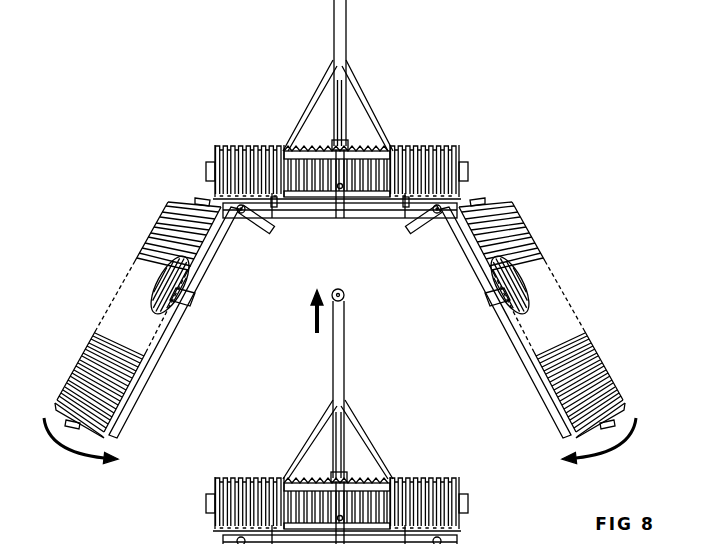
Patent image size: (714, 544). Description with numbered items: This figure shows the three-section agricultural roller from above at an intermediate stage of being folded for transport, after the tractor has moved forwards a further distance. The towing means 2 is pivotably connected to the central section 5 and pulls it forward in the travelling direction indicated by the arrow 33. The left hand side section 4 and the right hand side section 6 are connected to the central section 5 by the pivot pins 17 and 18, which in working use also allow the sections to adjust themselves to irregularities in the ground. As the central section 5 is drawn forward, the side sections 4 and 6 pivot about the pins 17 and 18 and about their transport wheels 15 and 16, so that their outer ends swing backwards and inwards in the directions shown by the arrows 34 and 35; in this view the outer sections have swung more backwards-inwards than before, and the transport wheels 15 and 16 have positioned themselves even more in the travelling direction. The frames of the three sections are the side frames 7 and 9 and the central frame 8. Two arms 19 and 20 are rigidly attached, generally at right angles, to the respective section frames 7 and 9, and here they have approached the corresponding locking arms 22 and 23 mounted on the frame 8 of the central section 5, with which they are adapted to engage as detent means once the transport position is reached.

The towing means 2 is at (347, 38).
The left hand side section 4 is at (80, 333).
The central section 5 is at (263, 122).
The right hand side section 6 is at (600, 334).
The frame of left side section 7 is at (173, 334).
The frame of central section 8 is at (353, 210).
The frame of right side section 9 is at (502, 323).
The transport wheel 15 is at (168, 290).
The transport wheel 16 is at (512, 282).
The pivot pin 17 is at (242, 214).
The pivot pin 18 is at (436, 214).
The arm 19 is at (262, 229).
The arm 20 is at (412, 229).
The locking arm 22 is at (276, 212).
The locking arm 23 is at (403, 213).
The arrow 33 is at (312, 318).
The arrow 34 is at (79, 442).
The arrow 35 is at (599, 442).